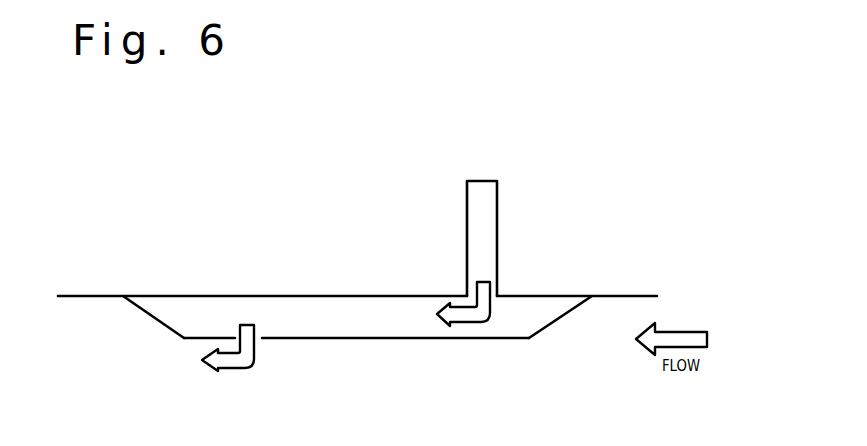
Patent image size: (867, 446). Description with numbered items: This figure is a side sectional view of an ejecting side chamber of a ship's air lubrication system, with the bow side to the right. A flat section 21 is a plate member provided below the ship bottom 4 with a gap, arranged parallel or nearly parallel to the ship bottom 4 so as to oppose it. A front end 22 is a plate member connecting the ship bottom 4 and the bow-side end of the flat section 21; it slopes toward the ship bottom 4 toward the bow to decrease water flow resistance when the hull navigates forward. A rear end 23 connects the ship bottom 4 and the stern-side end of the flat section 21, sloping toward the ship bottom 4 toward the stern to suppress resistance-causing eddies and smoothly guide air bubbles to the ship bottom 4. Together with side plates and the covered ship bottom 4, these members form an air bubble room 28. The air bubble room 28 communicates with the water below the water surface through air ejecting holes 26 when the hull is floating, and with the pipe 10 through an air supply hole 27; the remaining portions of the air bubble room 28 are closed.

The ship bottom 4 is at (92, 298).
The pipe 10 is at (467, 238).
The flat section 21 is at (357, 340).
The front end 22 is at (562, 318).
The rear end 23 is at (152, 320).
The air ejecting holes 26 is at (236, 321).
The air supply hole 27 is at (499, 307).
The air bubble room 28 is at (405, 325).